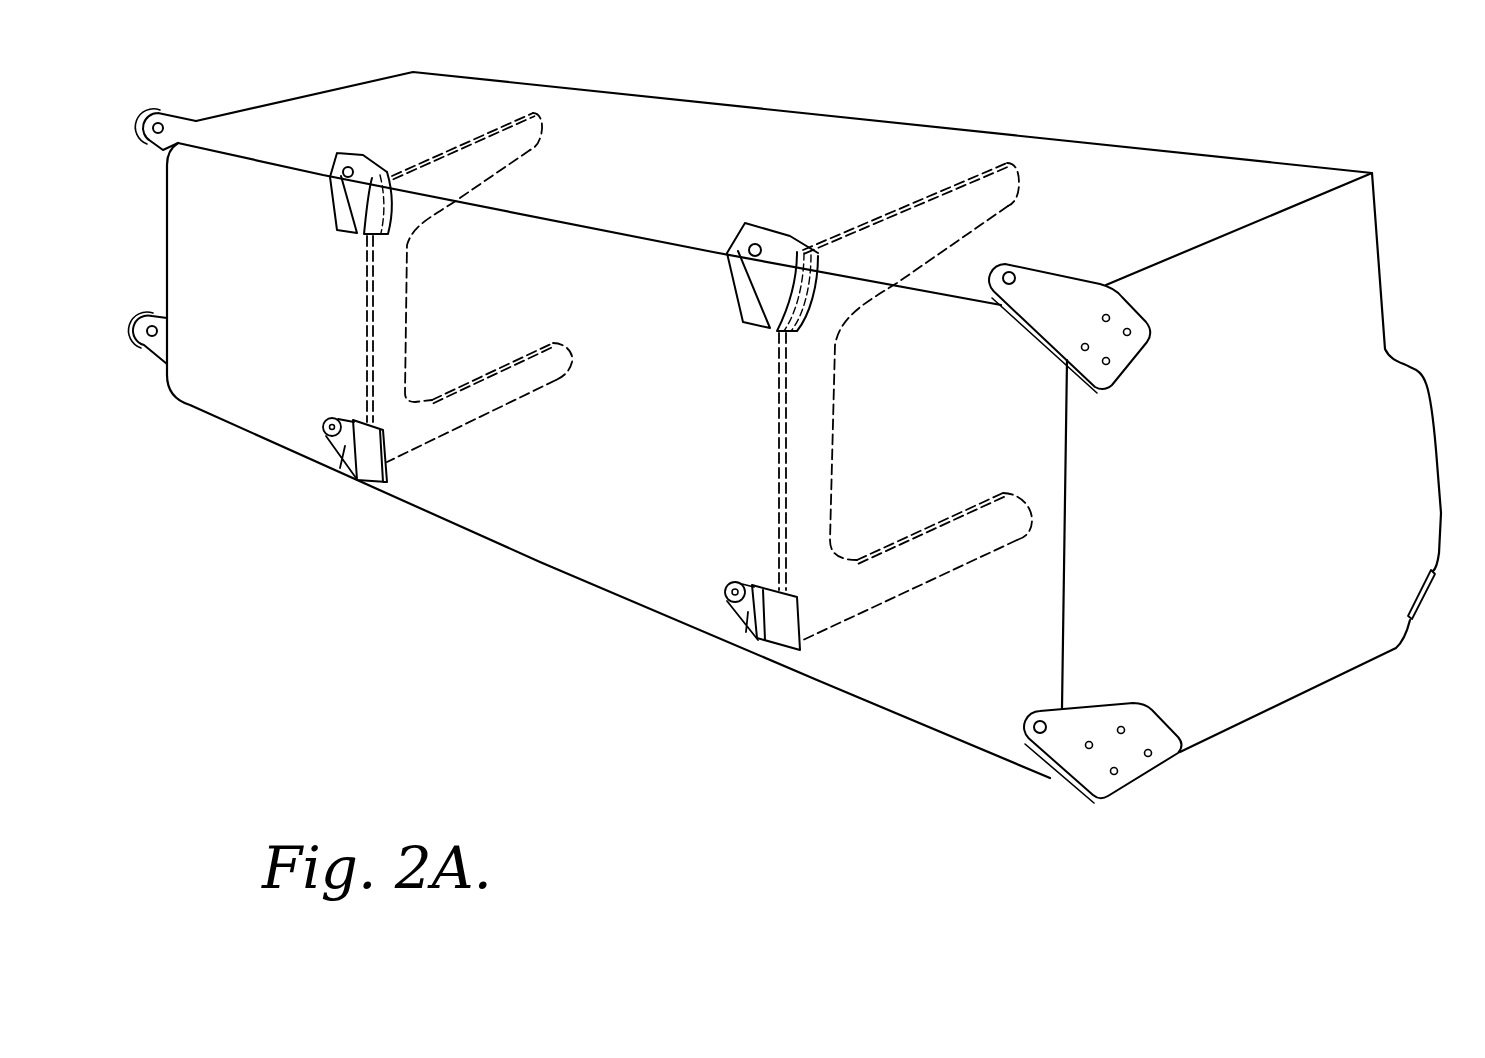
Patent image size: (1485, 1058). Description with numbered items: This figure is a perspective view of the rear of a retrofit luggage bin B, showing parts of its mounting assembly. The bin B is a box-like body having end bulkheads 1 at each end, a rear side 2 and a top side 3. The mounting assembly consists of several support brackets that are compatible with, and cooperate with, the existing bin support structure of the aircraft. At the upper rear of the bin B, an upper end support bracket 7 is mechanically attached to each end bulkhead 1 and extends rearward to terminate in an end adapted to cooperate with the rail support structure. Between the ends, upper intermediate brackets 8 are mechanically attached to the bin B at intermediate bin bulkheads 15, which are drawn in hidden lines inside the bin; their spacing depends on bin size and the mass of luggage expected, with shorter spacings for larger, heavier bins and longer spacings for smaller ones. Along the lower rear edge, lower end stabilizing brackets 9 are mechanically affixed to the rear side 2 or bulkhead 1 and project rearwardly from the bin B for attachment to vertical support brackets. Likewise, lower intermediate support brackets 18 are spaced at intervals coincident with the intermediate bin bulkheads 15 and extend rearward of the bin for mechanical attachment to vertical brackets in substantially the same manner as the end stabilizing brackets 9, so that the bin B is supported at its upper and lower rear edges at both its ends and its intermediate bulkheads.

The retrofit luggage bin B is at (1389, 122).
The end bulkhead 1 is at (1283, 495).
The rear side 2 is at (600, 413).
The top side 3 is at (673, 173).
The upper end support bracket 7 is at (170, 118).
The upper intermediate bracket 8 is at (363, 168).
The lower end stabilizing bracket 9 is at (152, 347).
The intermediate bin bulkhead 15 is at (457, 410).
The lower intermediate support bracket 18 is at (340, 472).